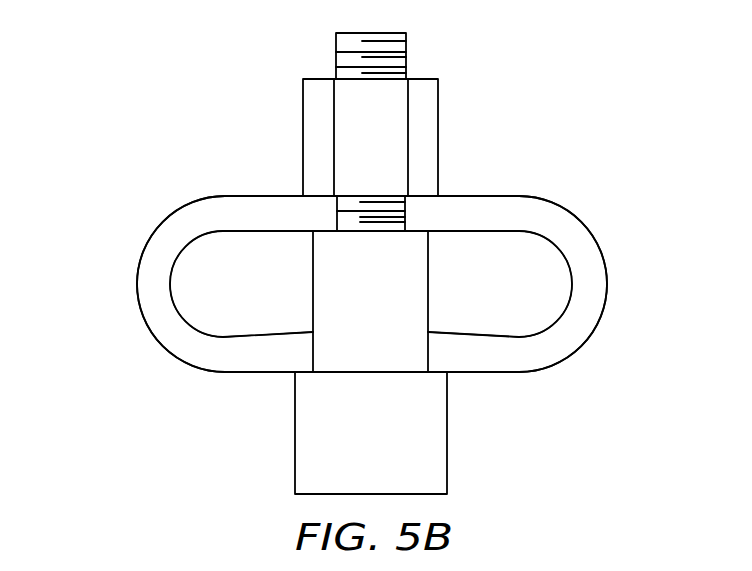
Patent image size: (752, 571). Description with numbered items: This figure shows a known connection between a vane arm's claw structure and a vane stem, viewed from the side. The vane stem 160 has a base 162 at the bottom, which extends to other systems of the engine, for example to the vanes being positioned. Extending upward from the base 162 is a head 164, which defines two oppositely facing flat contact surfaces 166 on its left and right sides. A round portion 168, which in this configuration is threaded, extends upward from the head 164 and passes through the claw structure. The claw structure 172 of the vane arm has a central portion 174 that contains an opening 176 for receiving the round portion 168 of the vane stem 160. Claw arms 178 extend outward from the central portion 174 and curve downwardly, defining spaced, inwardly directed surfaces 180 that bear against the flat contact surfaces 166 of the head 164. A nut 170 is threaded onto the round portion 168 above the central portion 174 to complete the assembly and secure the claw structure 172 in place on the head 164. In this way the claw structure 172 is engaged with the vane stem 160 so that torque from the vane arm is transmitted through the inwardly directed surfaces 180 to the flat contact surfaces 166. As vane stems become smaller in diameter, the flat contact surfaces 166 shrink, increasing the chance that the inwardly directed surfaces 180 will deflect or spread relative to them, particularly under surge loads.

The vane stem 160 is at (462, 439).
The base 162 is at (312, 430).
The head 164 is at (442, 251).
The flat contact surfaces 166 is at (313, 297).
The round portion 168 is at (406, 52).
The nut 170 is at (438, 117).
The claw structure 172 is at (628, 232).
The central portion 174 is at (283, 208).
The opening 176 is at (405, 214).
The claw arms 178 is at (160, 293).
The inwardly directed surfaces 180 is at (313, 350).